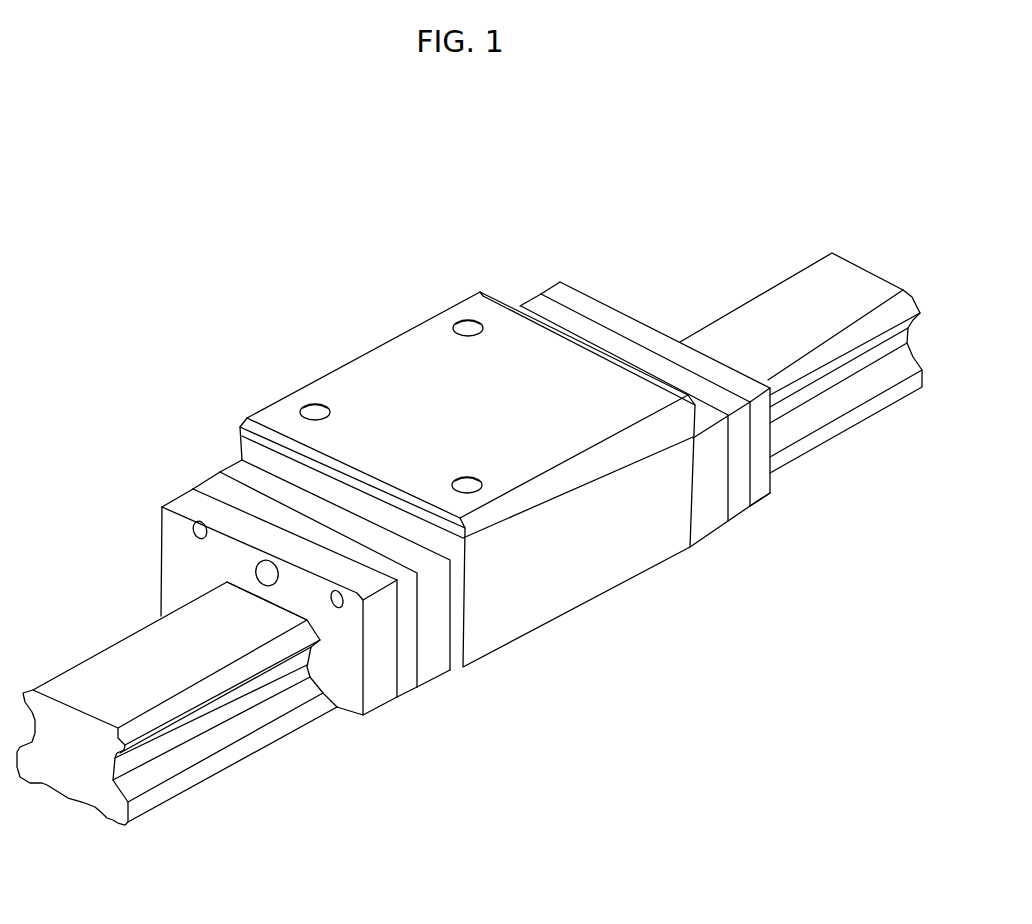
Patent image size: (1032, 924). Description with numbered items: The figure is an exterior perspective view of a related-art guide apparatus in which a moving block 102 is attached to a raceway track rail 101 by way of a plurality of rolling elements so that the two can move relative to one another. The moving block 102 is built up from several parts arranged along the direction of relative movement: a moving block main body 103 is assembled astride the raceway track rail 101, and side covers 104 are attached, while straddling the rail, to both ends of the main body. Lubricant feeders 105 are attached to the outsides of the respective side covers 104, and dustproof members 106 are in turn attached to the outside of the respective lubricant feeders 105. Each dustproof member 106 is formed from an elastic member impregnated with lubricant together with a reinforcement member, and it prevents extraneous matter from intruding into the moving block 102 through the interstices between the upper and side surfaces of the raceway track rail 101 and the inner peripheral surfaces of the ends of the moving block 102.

The raceway track rail 101 is at (868, 278).
The moving block 102 is at (385, 306).
The moving block main body 103 is at (373, 376).
The side cover 104 is at (243, 463).
The lubricant feeder 105 is at (220, 483).
The dustproof member 106 is at (193, 498).